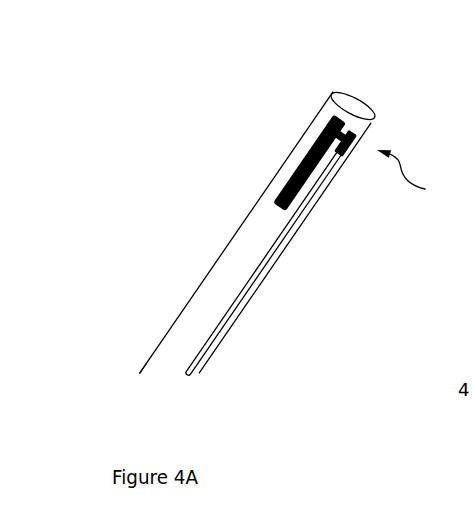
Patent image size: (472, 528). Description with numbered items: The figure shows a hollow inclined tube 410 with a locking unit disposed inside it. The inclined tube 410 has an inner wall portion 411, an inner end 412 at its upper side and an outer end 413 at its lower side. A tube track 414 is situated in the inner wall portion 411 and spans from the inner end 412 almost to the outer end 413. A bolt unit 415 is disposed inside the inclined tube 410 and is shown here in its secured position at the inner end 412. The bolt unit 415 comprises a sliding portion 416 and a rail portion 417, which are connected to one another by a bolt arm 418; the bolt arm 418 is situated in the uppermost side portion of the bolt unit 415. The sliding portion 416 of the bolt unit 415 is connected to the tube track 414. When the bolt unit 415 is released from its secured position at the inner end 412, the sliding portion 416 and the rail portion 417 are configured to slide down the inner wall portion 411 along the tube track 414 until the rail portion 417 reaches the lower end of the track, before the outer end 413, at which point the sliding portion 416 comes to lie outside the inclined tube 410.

The inclined tube 410 is at (201, 125).
The inner wall portion 411 is at (260, 197).
The inner end 412 is at (353, 106).
The outer end 413 is at (140, 373).
The tube track 414 is at (287, 237).
The bolt unit 415 is at (422, 172).
The sliding portion 416 is at (305, 182).
The rail portion 417 is at (362, 141).
The bolt arm 418 is at (350, 127).